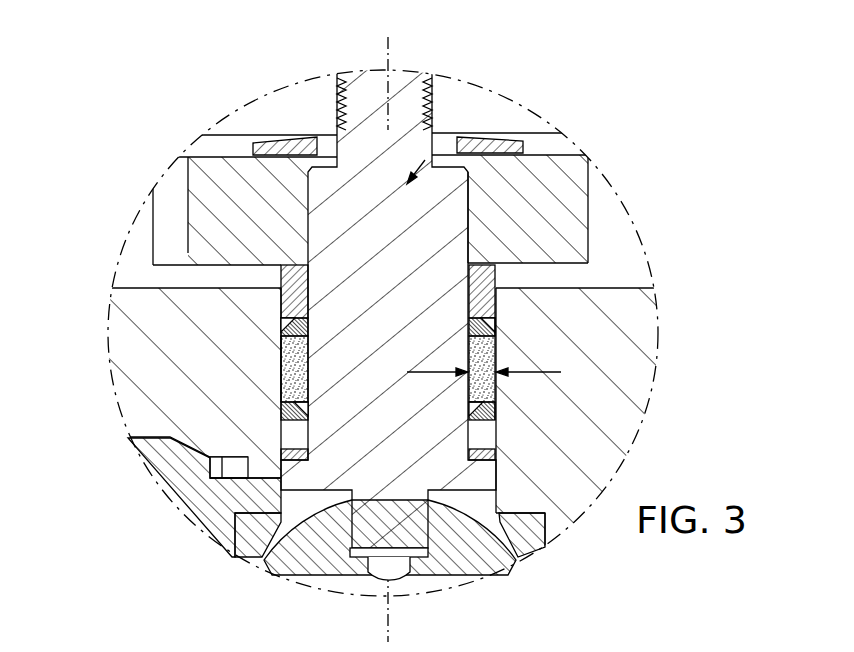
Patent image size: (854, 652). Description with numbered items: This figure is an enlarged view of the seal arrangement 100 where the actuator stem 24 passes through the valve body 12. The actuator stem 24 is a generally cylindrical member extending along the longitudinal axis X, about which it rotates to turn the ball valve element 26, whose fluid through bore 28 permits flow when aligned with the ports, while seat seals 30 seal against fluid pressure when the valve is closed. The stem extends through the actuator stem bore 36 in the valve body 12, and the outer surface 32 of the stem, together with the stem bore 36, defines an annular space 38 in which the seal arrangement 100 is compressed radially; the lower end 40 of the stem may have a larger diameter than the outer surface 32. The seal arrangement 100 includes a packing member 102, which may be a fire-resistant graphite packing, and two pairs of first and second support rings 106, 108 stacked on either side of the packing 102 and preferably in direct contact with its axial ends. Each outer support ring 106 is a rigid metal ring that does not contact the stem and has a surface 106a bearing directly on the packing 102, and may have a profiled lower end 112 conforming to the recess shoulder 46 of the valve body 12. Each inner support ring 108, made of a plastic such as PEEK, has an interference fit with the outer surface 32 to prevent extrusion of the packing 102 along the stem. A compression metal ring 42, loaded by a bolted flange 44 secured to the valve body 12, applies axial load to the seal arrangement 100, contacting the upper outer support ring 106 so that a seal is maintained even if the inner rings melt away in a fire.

The longitudinal axis X is at (388, 58).
The valve body 12 is at (643, 347).
The actuator stem 24 is at (458, 133).
The ball valve element 26 is at (282, 578).
The fluid through bore 28 is at (357, 588).
The seat seals 30 is at (248, 553).
The outer surface of the actuator stem 32 is at (480, 193).
The actuator stem bore 36 is at (281, 377).
The annular space 38 is at (496, 373).
The lower end of the actuator stem 40 is at (227, 482).
The compression metal ring 42 is at (281, 300).
The bolted flange 44 is at (596, 195).
The recess shoulder 46 is at (481, 423).
The seal arrangement 100 is at (172, 337).
The packing member 102 is at (281, 355).
The outer support ring 106 is at (282, 413).
The surface of the outer support ring 106a is at (497, 312).
The inner support ring 108 is at (310, 407).
The profiled lower end 112 is at (481, 422).